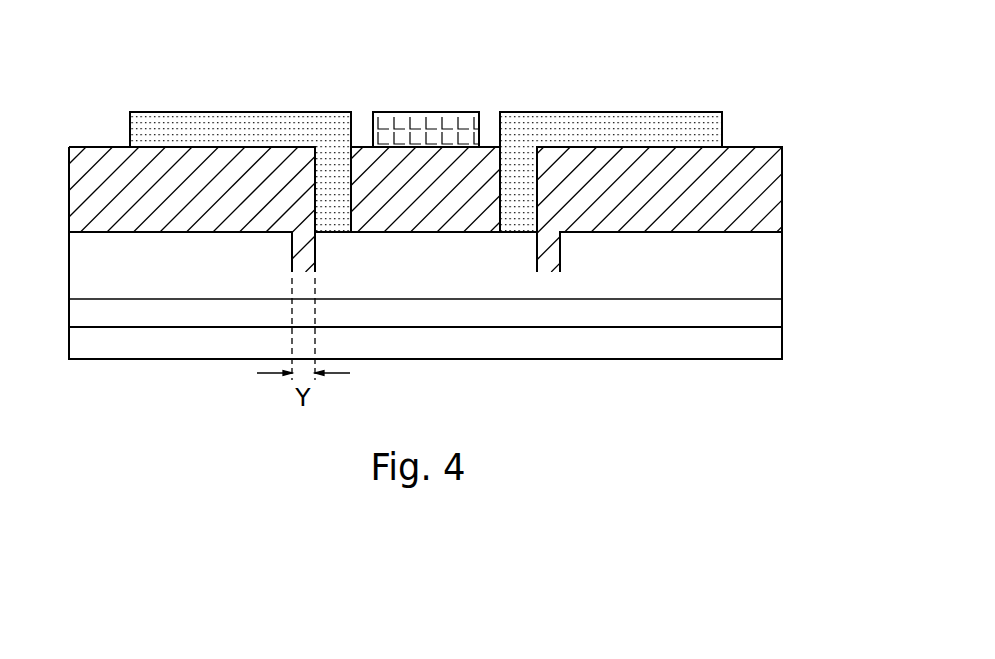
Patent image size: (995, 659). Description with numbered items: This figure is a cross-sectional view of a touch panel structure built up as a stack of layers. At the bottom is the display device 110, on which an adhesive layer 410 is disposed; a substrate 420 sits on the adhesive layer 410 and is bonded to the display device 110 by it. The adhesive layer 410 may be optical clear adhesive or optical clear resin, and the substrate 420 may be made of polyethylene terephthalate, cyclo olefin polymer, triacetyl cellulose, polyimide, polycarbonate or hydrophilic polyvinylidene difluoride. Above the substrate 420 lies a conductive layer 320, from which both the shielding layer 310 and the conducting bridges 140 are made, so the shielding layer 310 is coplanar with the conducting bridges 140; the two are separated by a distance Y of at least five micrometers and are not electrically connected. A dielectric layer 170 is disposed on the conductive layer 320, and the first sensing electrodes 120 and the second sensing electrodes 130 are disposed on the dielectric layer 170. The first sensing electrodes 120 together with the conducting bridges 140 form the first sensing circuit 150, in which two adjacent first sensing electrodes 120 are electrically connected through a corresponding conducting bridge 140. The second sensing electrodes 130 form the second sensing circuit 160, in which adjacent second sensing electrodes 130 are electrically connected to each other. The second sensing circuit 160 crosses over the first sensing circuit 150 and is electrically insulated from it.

The display device 110 is at (773, 344).
The first sensing electrodes 120 is at (260, 128).
The second sensing electrodes 130 is at (428, 130).
The conducting bridges 140 is at (513, 258).
The first sensing circuit 150 is at (315, 93).
The second sensing circuit 160 is at (458, 93).
The dielectric layer 170 is at (773, 190).
The shielding layer 310 is at (577, 258).
The conductive layer 320 is at (486, 396).
The adhesive layer 410 is at (773, 316).
The substrate 420 is at (773, 287).